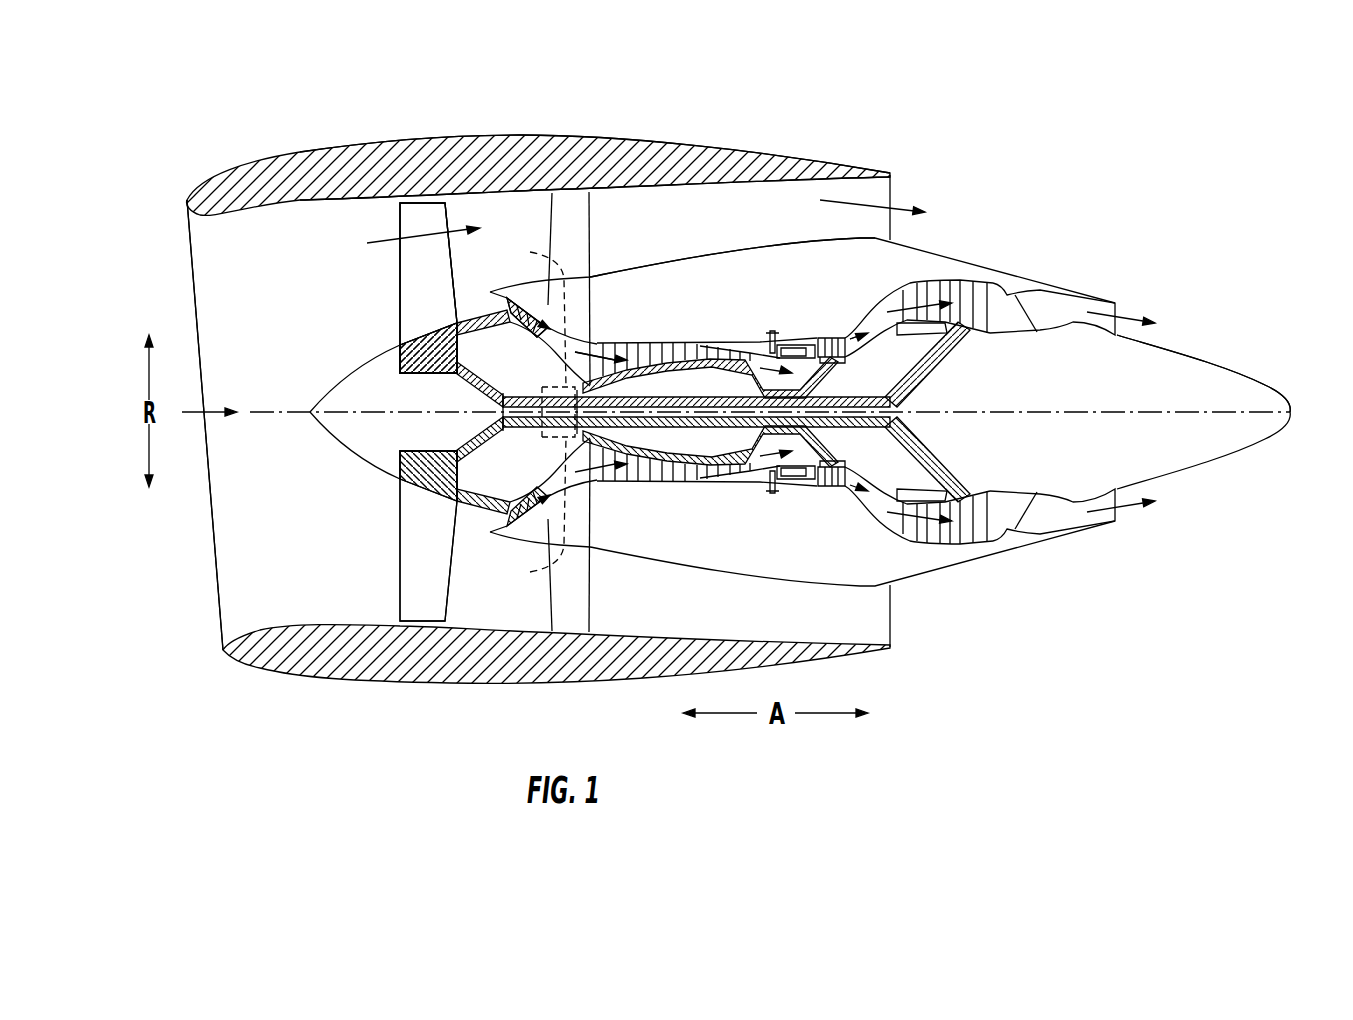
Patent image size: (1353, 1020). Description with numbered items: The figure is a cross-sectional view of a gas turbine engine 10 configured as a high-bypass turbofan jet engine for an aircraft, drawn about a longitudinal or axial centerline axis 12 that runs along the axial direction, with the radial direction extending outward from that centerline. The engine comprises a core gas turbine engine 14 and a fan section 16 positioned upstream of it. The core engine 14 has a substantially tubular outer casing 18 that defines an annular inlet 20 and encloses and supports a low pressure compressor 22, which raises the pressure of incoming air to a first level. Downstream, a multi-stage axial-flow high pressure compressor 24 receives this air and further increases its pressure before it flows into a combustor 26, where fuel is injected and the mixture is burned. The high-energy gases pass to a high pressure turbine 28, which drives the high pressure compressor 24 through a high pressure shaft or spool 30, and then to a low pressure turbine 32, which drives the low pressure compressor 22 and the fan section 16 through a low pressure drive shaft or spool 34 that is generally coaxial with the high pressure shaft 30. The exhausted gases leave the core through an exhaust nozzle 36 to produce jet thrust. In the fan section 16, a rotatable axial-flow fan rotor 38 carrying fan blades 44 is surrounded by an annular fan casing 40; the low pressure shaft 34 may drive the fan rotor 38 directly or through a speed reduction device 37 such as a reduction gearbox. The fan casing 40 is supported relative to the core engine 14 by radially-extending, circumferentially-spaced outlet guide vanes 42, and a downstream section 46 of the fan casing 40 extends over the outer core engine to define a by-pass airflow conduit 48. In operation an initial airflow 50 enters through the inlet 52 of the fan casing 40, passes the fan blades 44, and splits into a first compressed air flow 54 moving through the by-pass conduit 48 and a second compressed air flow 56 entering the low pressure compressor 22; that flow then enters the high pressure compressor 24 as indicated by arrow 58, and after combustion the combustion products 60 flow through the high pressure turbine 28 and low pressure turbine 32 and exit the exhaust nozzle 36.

The gas turbine engine 10 is at (1033, 172).
The longitudinal or axial centerline axis 12 is at (1057, 407).
The core gas turbine engine 14 is at (745, 297).
The fan section 16 is at (457, 100).
The outer casing 18 is at (707, 563).
The annular inlet 20 is at (490, 522).
The low pressure compressor 22 is at (547, 498).
The high pressure compressor 24 is at (618, 472).
The combustor 26 is at (788, 470).
The high pressure turbine 28 is at (837, 470).
The high pressure shaft or spool 30 is at (800, 384).
The low pressure turbine 32 is at (963, 525).
The low pressure drive shaft or spool 34 is at (555, 390).
The exhaust nozzle 36 is at (1118, 308).
The speed reduction device 37 is at (544, 402).
The fan rotor 38 is at (450, 377).
The fan casing 40 is at (427, 684).
The outlet guide vanes 42 is at (590, 205).
The fan blades 44 is at (400, 570).
The downstream section of the fan casing 46 is at (742, 150).
The by-pass airflow conduit 48 is at (709, 229).
The initial airflow 50 is at (208, 410).
The inlet 52 is at (217, 602).
The first compressed air flow 54 is at (387, 242).
The second compressed air flow 56 is at (490, 305).
The flow into HP compressor 58 is at (598, 343).
The combustion products 60 is at (832, 342).